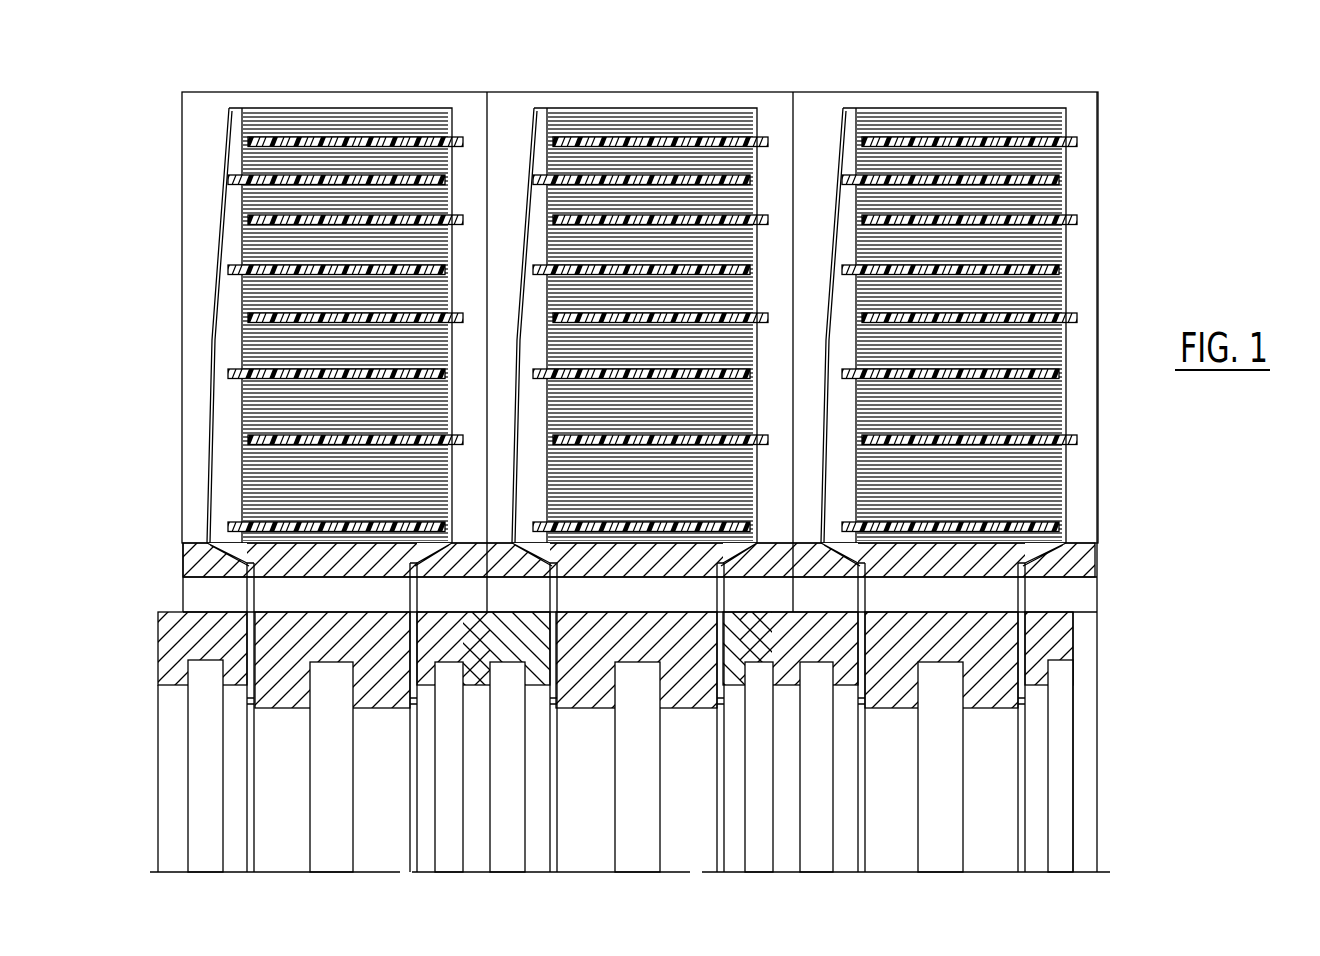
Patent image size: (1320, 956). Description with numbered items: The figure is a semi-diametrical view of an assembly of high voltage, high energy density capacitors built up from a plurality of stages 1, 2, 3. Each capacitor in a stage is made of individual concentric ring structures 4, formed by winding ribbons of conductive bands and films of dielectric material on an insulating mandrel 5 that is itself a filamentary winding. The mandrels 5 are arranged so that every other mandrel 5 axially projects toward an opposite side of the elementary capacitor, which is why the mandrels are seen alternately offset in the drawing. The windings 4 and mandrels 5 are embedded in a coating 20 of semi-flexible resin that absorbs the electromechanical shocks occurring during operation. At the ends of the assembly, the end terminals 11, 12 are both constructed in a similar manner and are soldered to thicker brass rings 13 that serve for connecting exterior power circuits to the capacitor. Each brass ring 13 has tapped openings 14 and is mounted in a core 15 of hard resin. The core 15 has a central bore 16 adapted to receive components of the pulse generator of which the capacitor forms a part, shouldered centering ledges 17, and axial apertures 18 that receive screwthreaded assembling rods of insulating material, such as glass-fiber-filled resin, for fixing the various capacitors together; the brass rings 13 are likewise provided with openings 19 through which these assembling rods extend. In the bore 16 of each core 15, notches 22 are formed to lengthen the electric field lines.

The stage 1 is at (309, 322).
The stage 2 is at (553, 131).
The stage 3 is at (1047, 130).
The concentric ring structure 4 is at (243, 128).
The insulating mandrel 5 is at (232, 180).
The end terminal 11 is at (198, 565).
The end terminal 12 is at (437, 546).
The brass ring 13 is at (240, 645).
The tapped opening 14 is at (252, 698).
The core 15 is at (173, 726).
The central bore 16 is at (200, 737).
The shouldered centering ledge 17 is at (472, 612).
The axial aperture 18 is at (317, 607).
The opening 19 is at (557, 595).
The coating 20 is at (190, 278).
The notch 22 is at (330, 690).